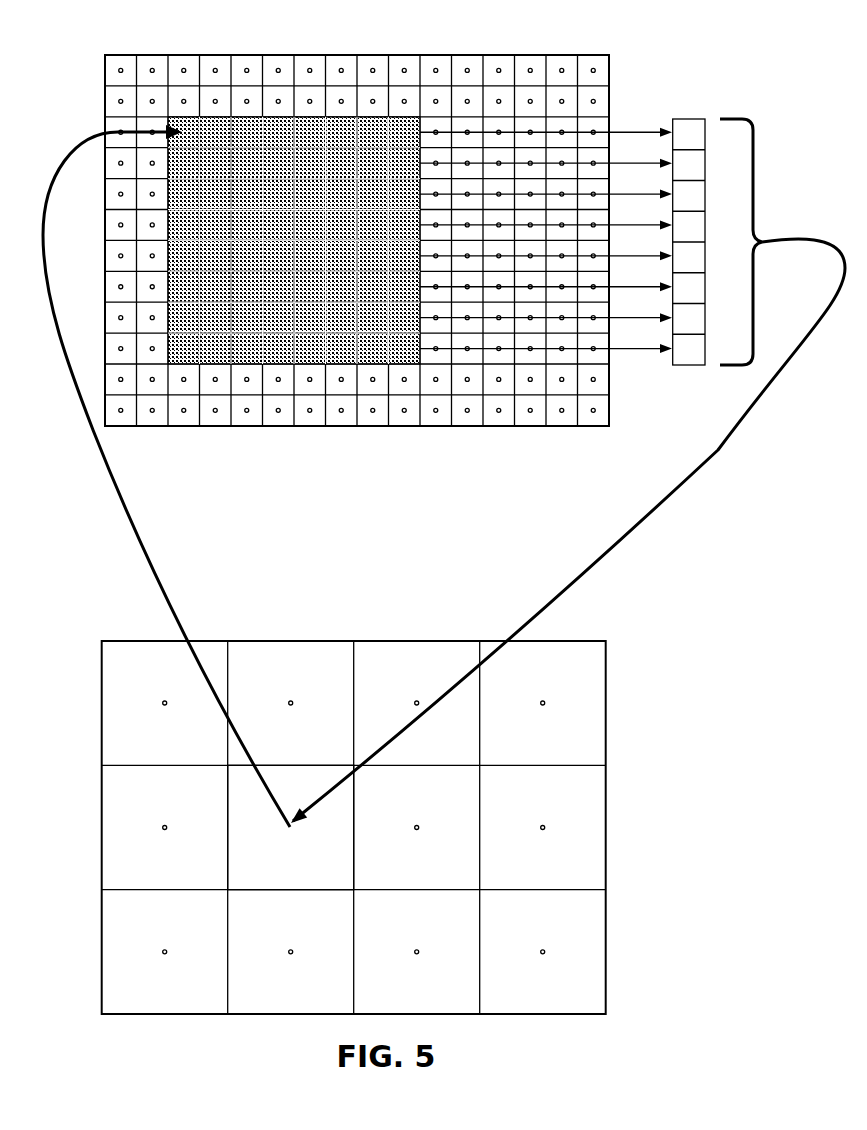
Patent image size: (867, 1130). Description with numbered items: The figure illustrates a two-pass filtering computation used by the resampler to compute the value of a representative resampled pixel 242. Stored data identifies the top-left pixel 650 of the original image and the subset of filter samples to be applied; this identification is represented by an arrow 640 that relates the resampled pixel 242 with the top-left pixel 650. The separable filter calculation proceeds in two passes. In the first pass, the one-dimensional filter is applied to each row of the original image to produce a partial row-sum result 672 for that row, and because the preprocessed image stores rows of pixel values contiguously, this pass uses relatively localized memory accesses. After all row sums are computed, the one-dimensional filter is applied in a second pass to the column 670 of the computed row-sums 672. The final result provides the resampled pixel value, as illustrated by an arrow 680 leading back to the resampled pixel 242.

The top-left pixel 650 is at (210, 125).
The column of computed row-sums 670 is at (748, 221).
The partial row-sum result 672 is at (688, 227).
The arrow 640 is at (134, 522).
The arrow 680 is at (653, 517).
The resampled pixel 242 is at (292, 822).